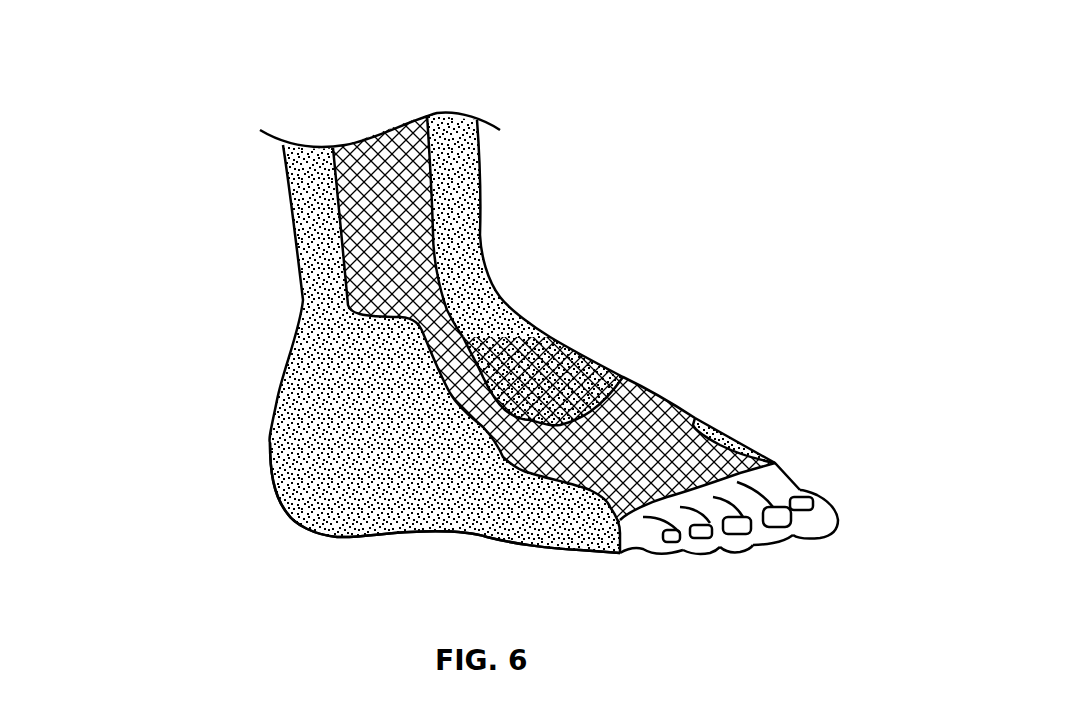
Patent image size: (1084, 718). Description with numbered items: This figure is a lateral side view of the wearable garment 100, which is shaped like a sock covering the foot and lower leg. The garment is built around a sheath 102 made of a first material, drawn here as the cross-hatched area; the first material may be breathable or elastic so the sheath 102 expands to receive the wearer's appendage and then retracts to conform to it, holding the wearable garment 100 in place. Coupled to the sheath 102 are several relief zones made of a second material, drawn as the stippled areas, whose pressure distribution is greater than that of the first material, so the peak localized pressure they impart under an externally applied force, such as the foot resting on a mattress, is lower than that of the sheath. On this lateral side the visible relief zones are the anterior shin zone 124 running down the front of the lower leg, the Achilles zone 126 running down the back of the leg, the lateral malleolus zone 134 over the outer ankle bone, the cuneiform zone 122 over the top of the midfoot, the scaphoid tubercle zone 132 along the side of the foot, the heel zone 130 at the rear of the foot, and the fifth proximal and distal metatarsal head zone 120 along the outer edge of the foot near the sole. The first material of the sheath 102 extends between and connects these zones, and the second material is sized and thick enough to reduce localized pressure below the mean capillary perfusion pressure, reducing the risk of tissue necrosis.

The wearable garment 100 is at (274, 63).
The sheath 102 is at (421, 110).
The fifth proximal and distal metatarsal head zone 120 is at (533, 553).
The cuneiform zone 122 is at (559, 359).
The anterior shin zone 124 is at (468, 154).
The Achilles zone 126 is at (319, 163).
The heel zone 130 is at (305, 514).
The scaphoid tubercle zone 132 is at (385, 480).
The lateral malleolus zone 134 is at (359, 363).